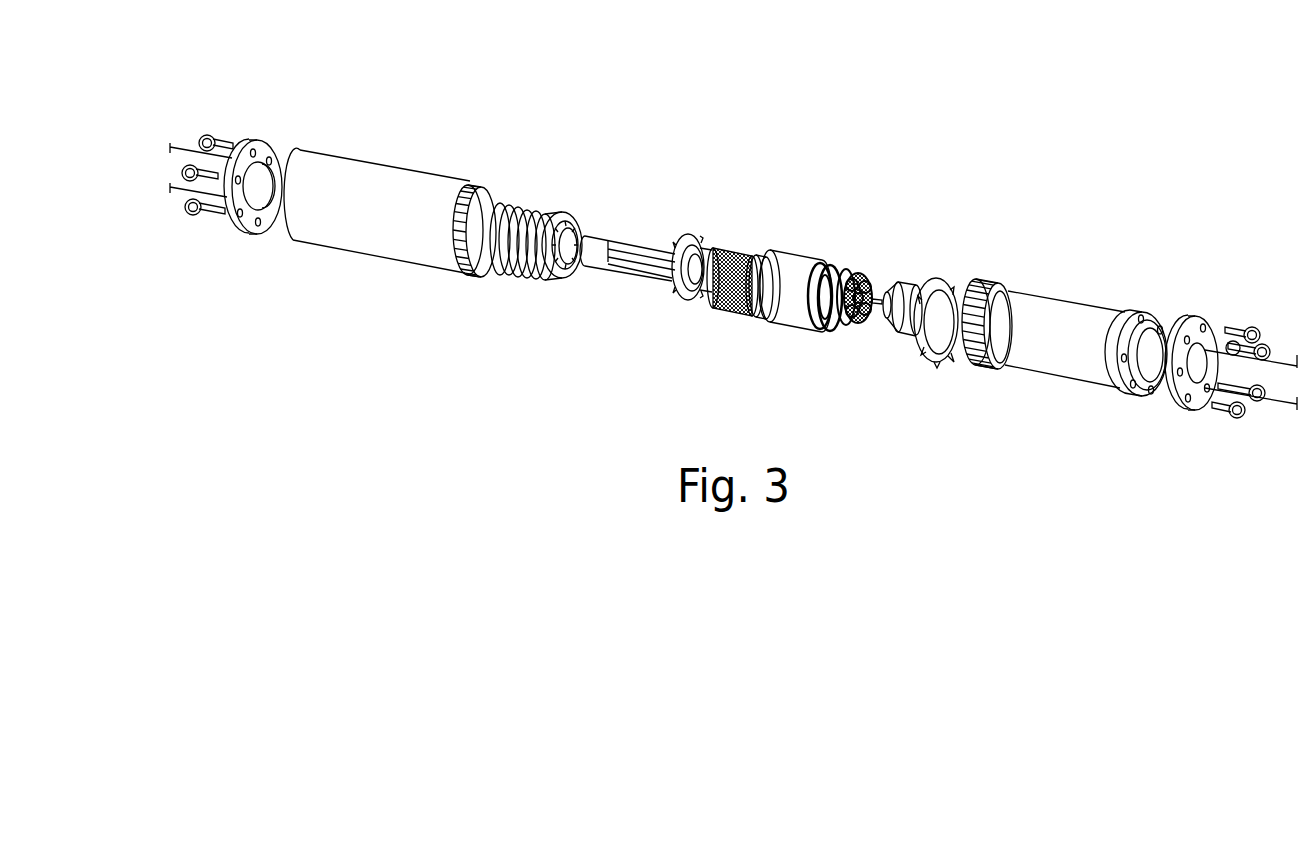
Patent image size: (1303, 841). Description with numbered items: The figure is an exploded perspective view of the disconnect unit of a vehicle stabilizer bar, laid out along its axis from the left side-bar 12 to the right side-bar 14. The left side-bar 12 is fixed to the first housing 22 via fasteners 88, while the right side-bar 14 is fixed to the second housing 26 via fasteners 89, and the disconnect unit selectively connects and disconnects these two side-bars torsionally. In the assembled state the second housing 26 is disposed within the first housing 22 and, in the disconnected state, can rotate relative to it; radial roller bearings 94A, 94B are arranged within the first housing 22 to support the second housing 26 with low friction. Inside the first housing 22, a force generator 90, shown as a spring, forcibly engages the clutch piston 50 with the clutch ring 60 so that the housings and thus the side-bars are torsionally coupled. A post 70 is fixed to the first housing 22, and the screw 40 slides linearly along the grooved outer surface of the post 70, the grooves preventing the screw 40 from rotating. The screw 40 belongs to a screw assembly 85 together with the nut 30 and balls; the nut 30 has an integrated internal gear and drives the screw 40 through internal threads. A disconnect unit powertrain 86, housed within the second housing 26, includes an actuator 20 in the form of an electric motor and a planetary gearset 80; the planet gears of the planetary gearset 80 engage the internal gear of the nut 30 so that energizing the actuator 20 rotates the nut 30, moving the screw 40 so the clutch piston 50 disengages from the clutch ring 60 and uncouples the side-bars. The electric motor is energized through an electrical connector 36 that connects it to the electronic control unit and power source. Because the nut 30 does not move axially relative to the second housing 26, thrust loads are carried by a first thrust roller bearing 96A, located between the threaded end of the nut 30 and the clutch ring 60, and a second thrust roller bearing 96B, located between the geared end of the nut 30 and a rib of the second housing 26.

The left side-bar 12 is at (263, 147).
The right side-bar 14 is at (1182, 320).
The actuator 20 is at (903, 280).
The first housing 22 is at (382, 175).
The second housing 26 is at (1062, 310).
The nut 30 is at (797, 263).
The electrical connector 36 is at (945, 362).
The screw 40 is at (742, 253).
The clutch piston 50 is at (572, 210).
The clutch ring 60 is at (687, 240).
The post 70 is at (622, 240).
The planetary gearset 80 is at (850, 327).
The screw assembly 85 is at (796, 242).
The disconnect unit powertrain 86 is at (908, 301).
The fasteners 88 is at (193, 213).
The fasteners 89 is at (1218, 407).
The force generator 90 is at (512, 270).
The radial roller bearing 94A is at (497, 187).
The radial roller bearing 94B is at (985, 283).
The first thrust roller bearing 96A is at (760, 317).
The second thrust roller bearing 96B is at (847, 263).